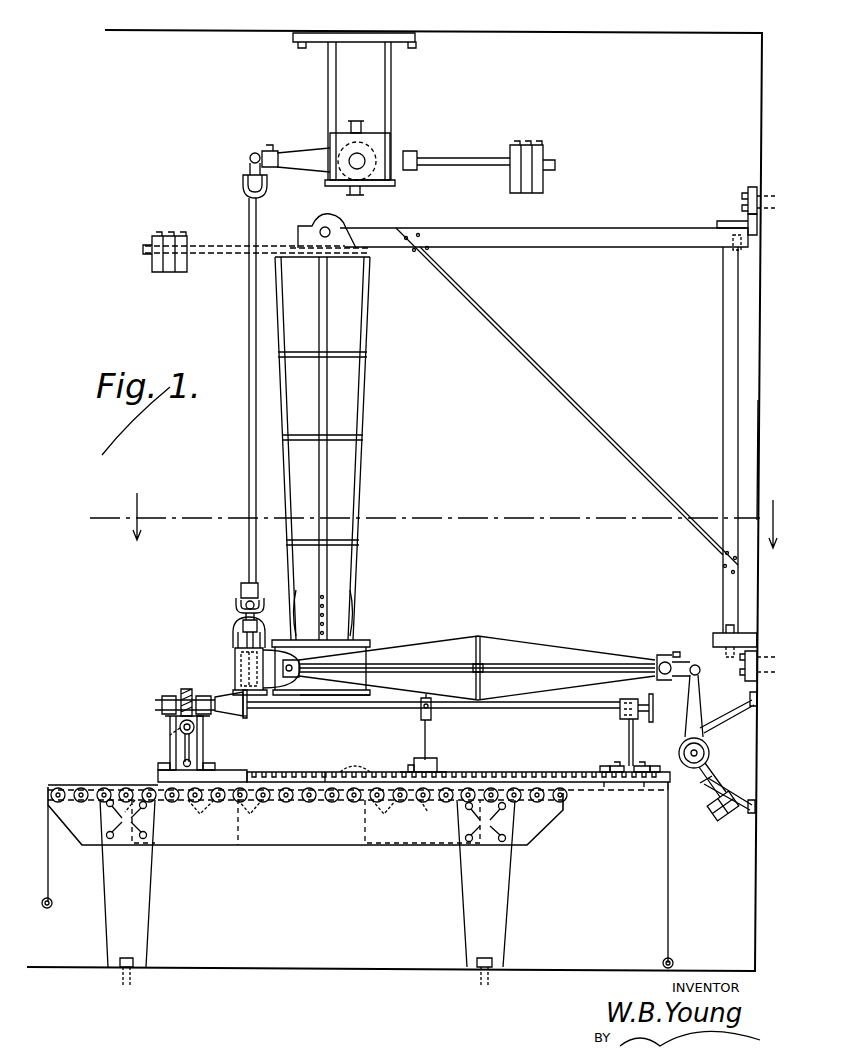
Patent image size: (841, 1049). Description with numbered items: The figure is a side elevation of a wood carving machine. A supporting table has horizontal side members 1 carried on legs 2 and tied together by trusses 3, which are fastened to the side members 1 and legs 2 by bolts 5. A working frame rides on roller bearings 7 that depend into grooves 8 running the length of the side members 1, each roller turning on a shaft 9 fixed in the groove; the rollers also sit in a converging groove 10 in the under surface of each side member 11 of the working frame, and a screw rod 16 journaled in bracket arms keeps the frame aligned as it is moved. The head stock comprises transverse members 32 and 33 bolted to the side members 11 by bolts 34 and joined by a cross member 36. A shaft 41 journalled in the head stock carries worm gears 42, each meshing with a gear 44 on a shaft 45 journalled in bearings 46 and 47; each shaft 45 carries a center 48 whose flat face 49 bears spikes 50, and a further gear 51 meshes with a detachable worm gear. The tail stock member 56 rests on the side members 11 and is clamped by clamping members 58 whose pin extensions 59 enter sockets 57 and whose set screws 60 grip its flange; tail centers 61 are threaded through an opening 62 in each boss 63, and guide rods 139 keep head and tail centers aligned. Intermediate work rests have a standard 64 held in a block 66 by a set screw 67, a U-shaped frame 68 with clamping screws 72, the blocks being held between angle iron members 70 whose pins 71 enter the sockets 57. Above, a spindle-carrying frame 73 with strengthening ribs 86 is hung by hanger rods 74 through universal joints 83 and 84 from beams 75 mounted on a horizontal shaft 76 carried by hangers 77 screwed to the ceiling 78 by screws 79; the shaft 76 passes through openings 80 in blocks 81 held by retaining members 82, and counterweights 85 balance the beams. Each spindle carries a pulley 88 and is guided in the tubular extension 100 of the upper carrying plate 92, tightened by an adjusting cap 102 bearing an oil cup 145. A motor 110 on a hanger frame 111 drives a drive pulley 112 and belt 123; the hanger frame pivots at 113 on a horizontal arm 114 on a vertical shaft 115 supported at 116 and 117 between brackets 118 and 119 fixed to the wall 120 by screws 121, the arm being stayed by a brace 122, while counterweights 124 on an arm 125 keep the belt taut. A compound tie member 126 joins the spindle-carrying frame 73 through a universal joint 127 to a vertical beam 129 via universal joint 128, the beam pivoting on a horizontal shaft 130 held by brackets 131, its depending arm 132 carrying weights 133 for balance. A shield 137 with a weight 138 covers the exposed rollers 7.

The side members 1 is at (262, 838).
The legs 2 is at (150, 903).
The trusses 3 is at (105, 515).
The bolts 5 is at (126, 814).
The roller bearings 7 is at (292, 813).
The grooves 8 is at (250, 813).
The shaft 9 is at (309, 800).
The groove 10 is at (246, 775).
The side member 11 is at (330, 772).
The screw rod 16 is at (512, 772).
The member 32 is at (170, 753).
The member 33 is at (203, 752).
The bolts 34 is at (158, 766).
The cross member 36 is at (180, 728).
The shaft 41 is at (192, 730).
The worm gears 42 is at (170, 736).
The gear 44 is at (183, 689).
The shaft 45 is at (226, 697).
The bearing 46 is at (203, 696).
The bearing 47 is at (162, 698).
The center 48 is at (236, 714).
The flat face 49 is at (270, 710).
The spikes 50 is at (247, 700).
The gear 51 is at (140, 815).
The tail stock member 56 is at (634, 730).
The sockets 57 is at (340, 772).
The clamping members 58 is at (602, 766).
The pin extensions 59 is at (606, 787).
The set screws 60 is at (615, 762).
The tail centers 61 is at (654, 710).
The opening 62 is at (630, 703).
The boss 63 is at (620, 702).
The standard 64 is at (432, 738).
The block 66 is at (437, 760).
The set screw 67 is at (410, 765).
The U-shaped frame 68 is at (421, 716).
The angle iron members 70 is at (405, 770).
The pins 71 is at (434, 814).
The clamping screws 72 is at (421, 700).
The spindle-carrying frame 73 is at (237, 668).
The hanger rods 74 is at (249, 485).
The beams 75 is at (312, 150).
The horizontal shaft 76 is at (362, 158).
The hangers 77 is at (328, 77).
The ceiling 78 is at (572, 38).
The screws 79 is at (302, 48).
The openings 80 is at (345, 162).
The blocks 81 is at (390, 176).
The retaining members 82 is at (360, 132).
The universal joint arrangement 83 is at (250, 158).
The universal joint arrangement 84 is at (236, 606).
The counterweights 85 is at (510, 182).
The strengthening ribs 86 is at (262, 676).
The pulley 88 is at (236, 646).
The upper carrying plate 92 is at (260, 628).
The tubular extension 100 is at (256, 615).
The adjusting cap 102 is at (238, 624).
The motor 110 is at (340, 624).
The hanger frame 111 is at (360, 422).
The drive pulley 112 is at (365, 642).
The pivot 113 is at (330, 230).
The horizontal arm 114 is at (530, 233).
The vertical shaft 115 is at (723, 408).
The support 116 is at (717, 224).
The support 117 is at (718, 638).
The bracket 118 is at (757, 228).
The bracket 119 is at (757, 645).
The wall 120 is at (758, 450).
The screws 121 is at (748, 197).
The brace 122 is at (612, 443).
The belt 123 is at (370, 663).
The counterweights 124 is at (156, 272).
The arm 125 is at (238, 252).
The compound tie member 126 is at (530, 648).
The universal joint arrangement 127 is at (292, 677).
The universal joint 128 is at (673, 658).
The vertical beam 129 is at (702, 700).
The horizontal shaft 130 is at (709, 753).
The brackets 131 is at (740, 790).
The depending arm 132 is at (704, 783).
The weights 133 is at (718, 818).
The shield 137 is at (48, 845).
The weight 138 is at (52, 904).
The guide rods 139 is at (362, 712).
The oil cup 145 is at (258, 596).